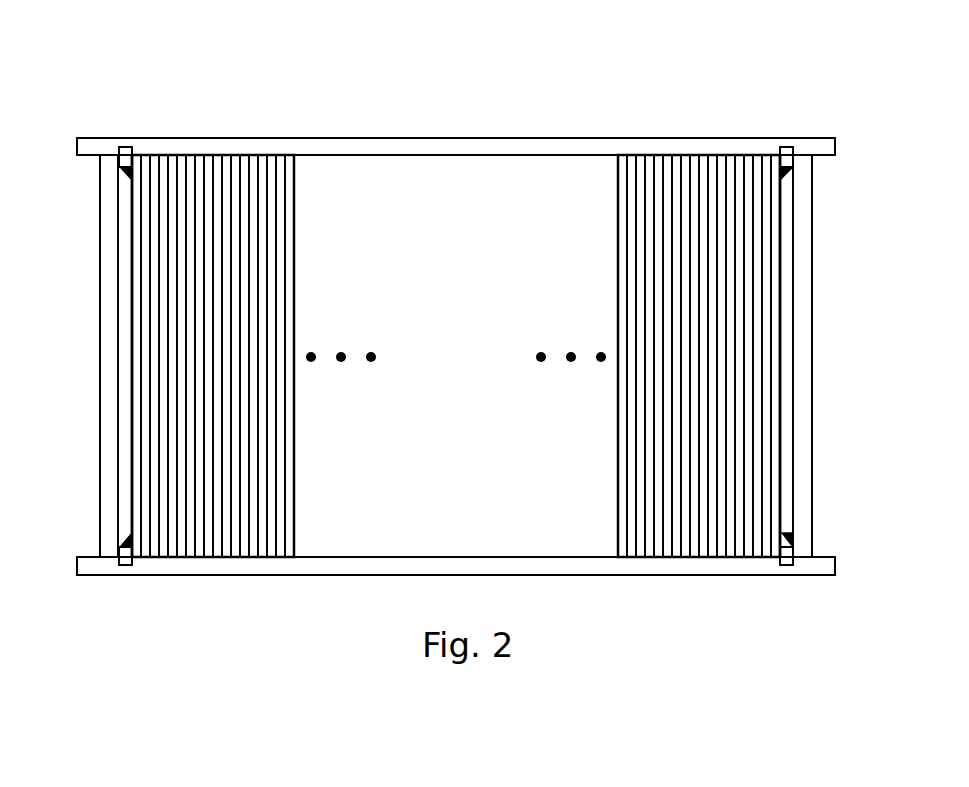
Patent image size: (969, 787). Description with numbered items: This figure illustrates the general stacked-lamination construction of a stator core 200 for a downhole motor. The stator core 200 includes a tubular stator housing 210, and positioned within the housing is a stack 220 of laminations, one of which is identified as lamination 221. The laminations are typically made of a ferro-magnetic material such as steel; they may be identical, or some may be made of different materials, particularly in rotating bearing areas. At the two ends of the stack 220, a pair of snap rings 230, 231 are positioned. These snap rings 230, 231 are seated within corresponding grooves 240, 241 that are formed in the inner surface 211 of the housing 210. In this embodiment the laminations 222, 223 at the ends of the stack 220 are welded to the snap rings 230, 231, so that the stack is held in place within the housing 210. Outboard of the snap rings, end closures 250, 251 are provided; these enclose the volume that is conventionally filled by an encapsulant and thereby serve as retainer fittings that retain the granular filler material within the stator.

The stator core 200 is at (345, 75).
The tubular stator housing 210 is at (491, 138).
The inner surface of housing 211 is at (413, 156).
The stack of laminations 220 is at (702, 135).
The lamination 221 is at (294, 228).
The end lamination 222 is at (133, 237).
The end lamination 223 is at (780, 260).
The snap ring 230 is at (124, 147).
The snap ring 231 is at (787, 147).
The groove 240 is at (120, 150).
The groove 241 is at (793, 150).
The end closure 250 is at (100, 325).
The end closure 251 is at (812, 306).